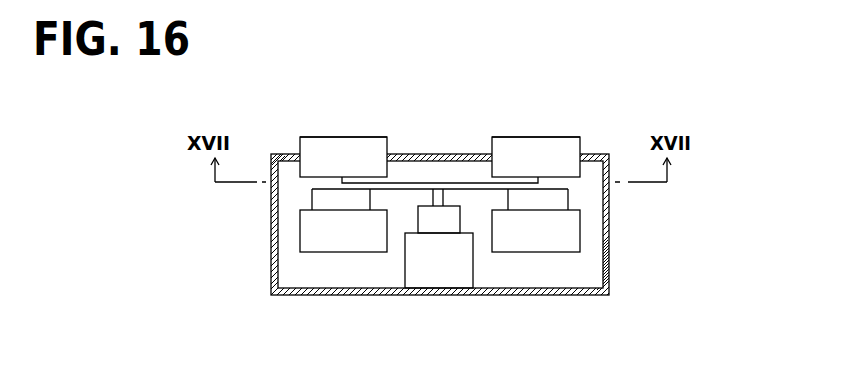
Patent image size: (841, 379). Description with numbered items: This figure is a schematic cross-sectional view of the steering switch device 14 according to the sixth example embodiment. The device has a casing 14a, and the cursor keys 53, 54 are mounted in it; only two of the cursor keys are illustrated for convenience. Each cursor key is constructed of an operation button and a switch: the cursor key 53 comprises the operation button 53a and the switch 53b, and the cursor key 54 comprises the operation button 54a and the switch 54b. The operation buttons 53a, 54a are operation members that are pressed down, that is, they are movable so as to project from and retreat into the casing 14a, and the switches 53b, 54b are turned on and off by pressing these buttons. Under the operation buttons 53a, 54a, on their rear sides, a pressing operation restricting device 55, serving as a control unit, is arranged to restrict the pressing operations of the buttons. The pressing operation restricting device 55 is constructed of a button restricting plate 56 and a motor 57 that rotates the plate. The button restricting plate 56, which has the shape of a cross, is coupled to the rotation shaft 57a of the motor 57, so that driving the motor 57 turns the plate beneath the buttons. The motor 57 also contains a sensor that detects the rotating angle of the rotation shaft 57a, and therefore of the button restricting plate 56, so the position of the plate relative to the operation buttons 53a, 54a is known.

The steering switch device 14 is at (441, 153).
The casing 14a is at (609, 271).
The cursor key 53 is at (349, 137).
The operation button 53a is at (322, 137).
The switch 53b is at (300, 230).
The cursor key 54 is at (537, 137).
The operation button 54a is at (562, 137).
The switch 54b is at (581, 233).
The pressing operation restricting device 55 is at (463, 170).
The button restricting plate 56 is at (406, 180).
The motor 57 is at (433, 223).
The rotation shaft 57a is at (430, 193).